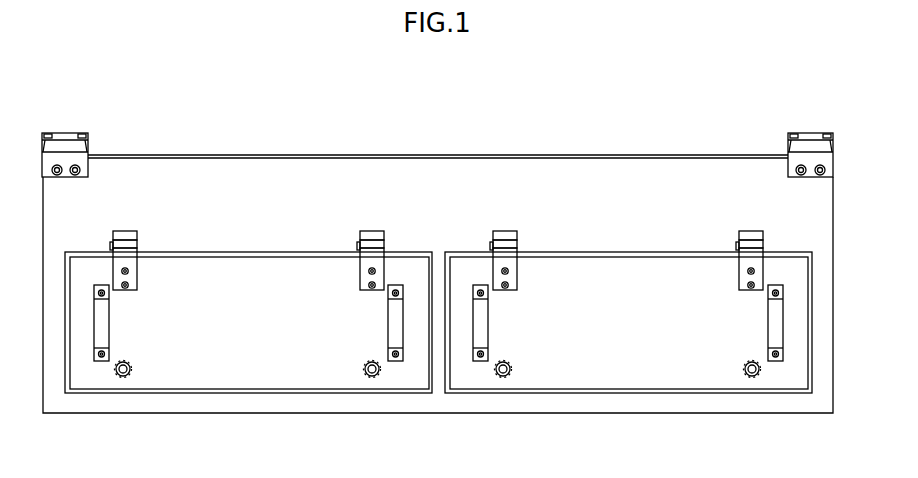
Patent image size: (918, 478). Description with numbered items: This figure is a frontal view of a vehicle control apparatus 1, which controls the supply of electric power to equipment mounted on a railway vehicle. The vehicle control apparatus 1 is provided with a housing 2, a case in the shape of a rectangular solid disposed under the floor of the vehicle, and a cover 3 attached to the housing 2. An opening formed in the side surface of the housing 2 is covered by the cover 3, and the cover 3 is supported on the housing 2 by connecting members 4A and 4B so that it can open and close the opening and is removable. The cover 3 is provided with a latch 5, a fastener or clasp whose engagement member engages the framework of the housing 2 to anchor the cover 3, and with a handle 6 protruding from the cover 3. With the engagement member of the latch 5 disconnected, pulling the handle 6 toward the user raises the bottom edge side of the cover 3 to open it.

The vehicle control apparatus 1 is at (264, 138).
The housing 2 is at (205, 185).
The cover 3 is at (258, 375).
The connecting member 4A is at (122, 238).
The connecting member 4B is at (374, 238).
The latch 5 is at (127, 374).
The handle 6 is at (95, 340).